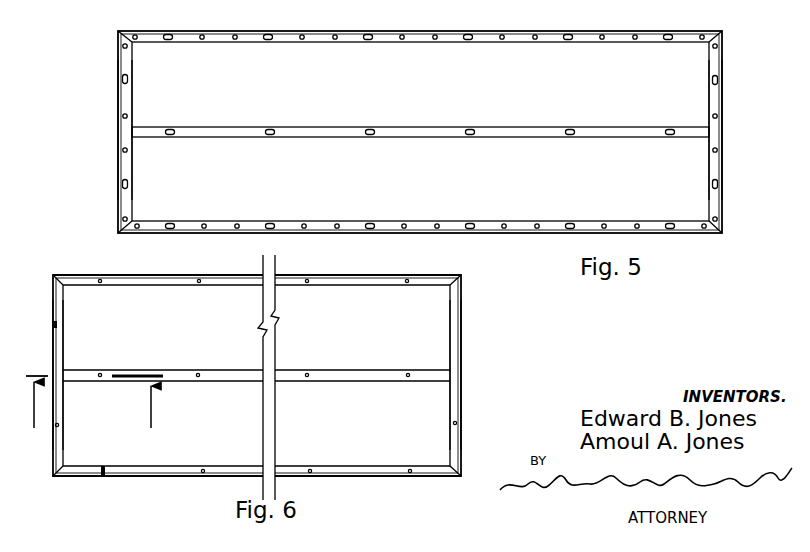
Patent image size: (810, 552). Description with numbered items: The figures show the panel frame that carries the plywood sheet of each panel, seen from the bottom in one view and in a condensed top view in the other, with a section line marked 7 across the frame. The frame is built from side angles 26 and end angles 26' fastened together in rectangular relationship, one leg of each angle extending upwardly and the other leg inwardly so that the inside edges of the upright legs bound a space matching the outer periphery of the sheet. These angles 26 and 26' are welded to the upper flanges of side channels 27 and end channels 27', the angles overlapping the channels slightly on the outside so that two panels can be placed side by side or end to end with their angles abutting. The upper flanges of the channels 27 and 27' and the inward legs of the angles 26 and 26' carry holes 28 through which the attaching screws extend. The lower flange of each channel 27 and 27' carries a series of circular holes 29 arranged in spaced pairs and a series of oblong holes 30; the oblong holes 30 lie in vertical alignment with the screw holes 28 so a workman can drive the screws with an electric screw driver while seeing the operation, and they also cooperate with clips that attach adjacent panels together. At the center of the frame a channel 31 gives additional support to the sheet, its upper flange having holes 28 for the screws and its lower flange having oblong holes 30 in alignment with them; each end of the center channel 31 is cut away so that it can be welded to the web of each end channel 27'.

In FIG. 5, the side angle 26 is at (420, 130).
In FIG. 6, the side angle 26 is at (257, 376).
In FIG. 5, the end angle 26' is at (425, 130).
In FIG. 6, the end angle 26' is at (266, 392).
In FIG. 5, the side channel 27 is at (420, 132).
In FIG. 6, the side channel 27 is at (256, 375).
In FIG. 5, the end channel 27' is at (420, 130).
In FIG. 6, the end channel 27' is at (256, 376).
In FIG. 6, the holes 28 is at (100, 283).
In FIG. 5, the circular holes 29 is at (201, 42).
In FIG. 5, the oblong holes 30 is at (268, 44).
In FIG. 5, the center channel 31 is at (513, 127).
In FIG. 6, the center channel 31 is at (330, 370).
In FIG. 6, the section line 7- 7 is at (94, 405).